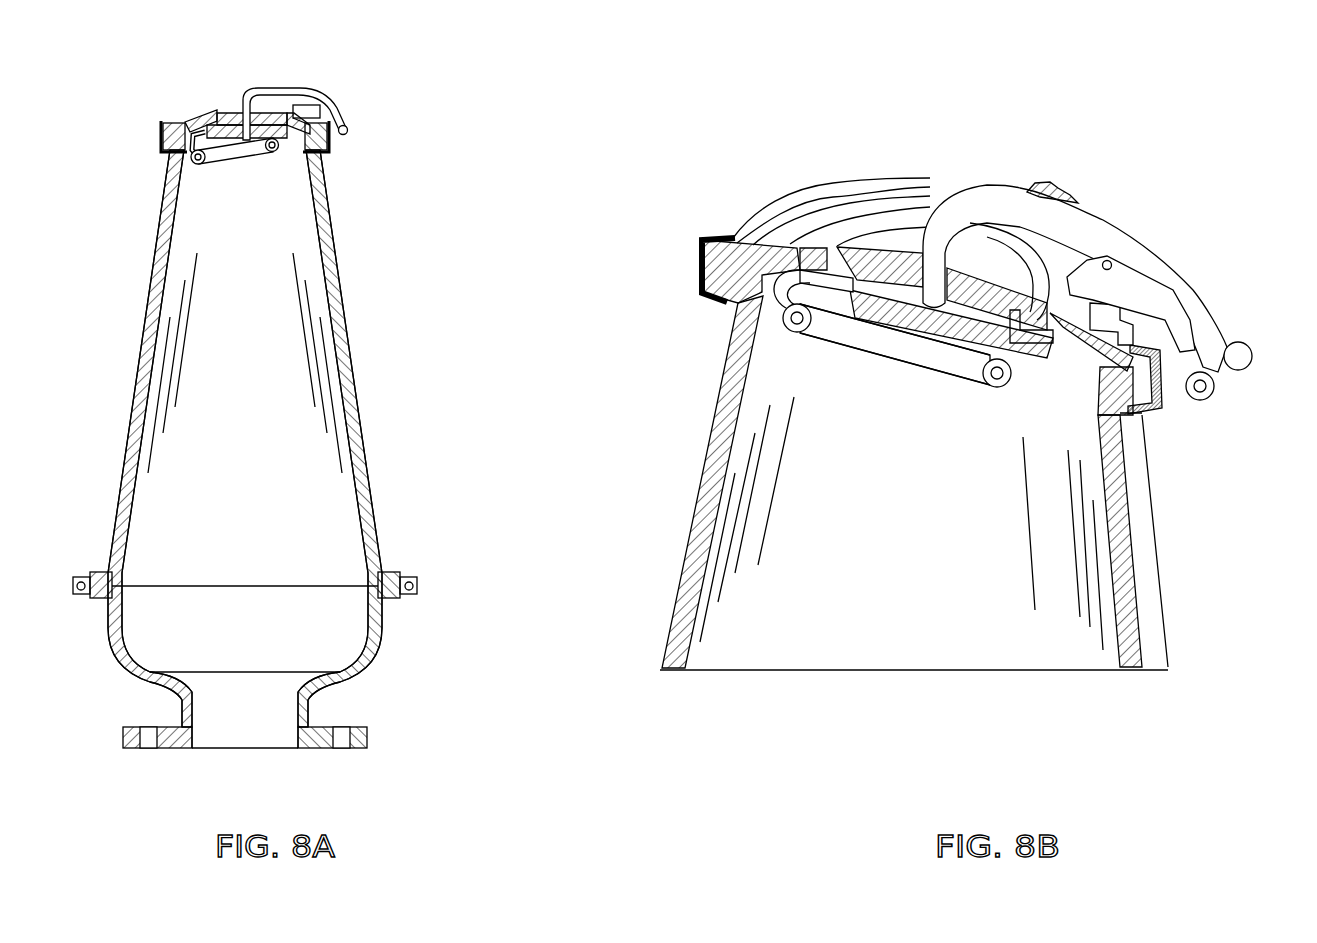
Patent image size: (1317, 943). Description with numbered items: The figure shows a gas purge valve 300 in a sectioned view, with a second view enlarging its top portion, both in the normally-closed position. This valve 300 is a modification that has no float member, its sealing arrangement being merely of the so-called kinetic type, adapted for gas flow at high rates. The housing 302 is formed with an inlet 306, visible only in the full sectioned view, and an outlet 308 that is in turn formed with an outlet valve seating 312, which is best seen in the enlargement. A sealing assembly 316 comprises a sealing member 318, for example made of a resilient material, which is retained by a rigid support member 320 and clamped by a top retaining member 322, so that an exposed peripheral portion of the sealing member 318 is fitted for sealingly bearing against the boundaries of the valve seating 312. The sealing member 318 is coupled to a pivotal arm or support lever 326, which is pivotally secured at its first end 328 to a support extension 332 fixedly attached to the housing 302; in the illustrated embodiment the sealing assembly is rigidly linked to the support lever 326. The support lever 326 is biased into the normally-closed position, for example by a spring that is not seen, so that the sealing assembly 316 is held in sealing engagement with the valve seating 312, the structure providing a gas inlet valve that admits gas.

In FIG. 8A, the valve 300 is at (297, 408).
In FIG. 8B, the valve 300 is at (899, 355).
In FIG. 8A, the housing 302 is at (358, 402).
In FIG. 8B, the housing 302 is at (1147, 557).
In FIG. 8A, the inlet 306 is at (257, 713).
In FIG. 8A, the outlet 308 is at (207, 118).
In FIG. 8B, the outlet 308 is at (860, 230).
In FIG. 8B, the outlet valve seating 312 is at (1068, 327).
In FIG. 8A, the sealing assembly 316 is at (232, 107).
In FIG. 8B, the sealing assembly 316 is at (923, 224).
In FIG. 8A, the sealing member 318 is at (212, 126).
In FIG. 8B, the sealing member 318 is at (845, 255).
In FIG. 8B, the rigid support member 320 is at (927, 337).
In FIG. 8B, the top retaining member 322 is at (993, 267).
In FIG. 8A, the support lever 326 is at (293, 86).
In FIG. 8B, the support lever 326 is at (1002, 215).
In FIG. 8A, the first end 328 is at (348, 134).
In FIG. 8B, the first end 328 is at (1198, 396).
In FIG. 8A, the support extension 332 is at (327, 110).
In FIG. 8B, the support extension 332 is at (1157, 300).